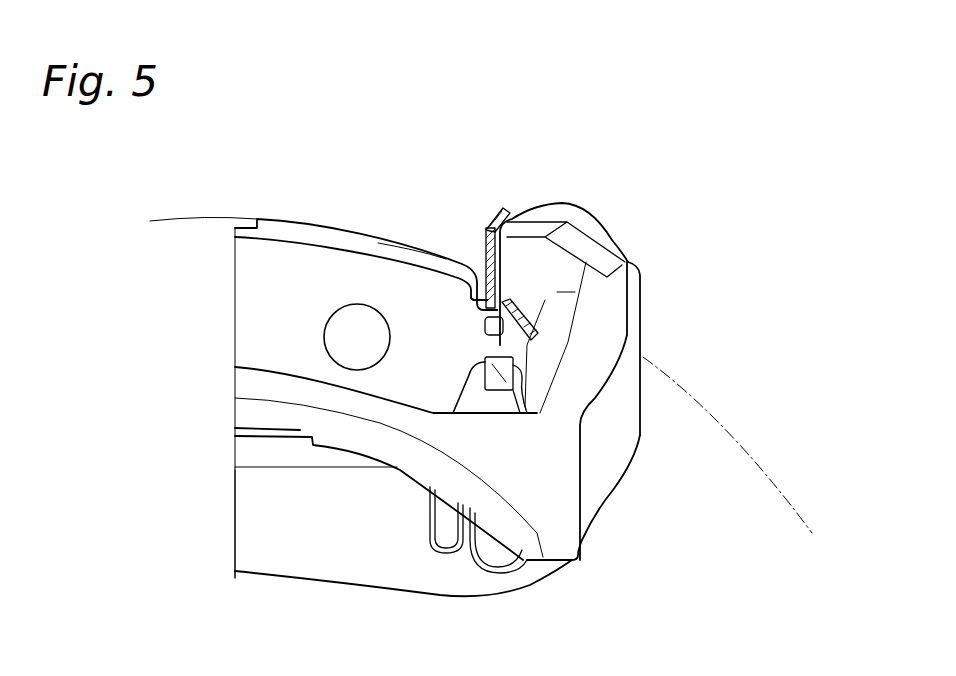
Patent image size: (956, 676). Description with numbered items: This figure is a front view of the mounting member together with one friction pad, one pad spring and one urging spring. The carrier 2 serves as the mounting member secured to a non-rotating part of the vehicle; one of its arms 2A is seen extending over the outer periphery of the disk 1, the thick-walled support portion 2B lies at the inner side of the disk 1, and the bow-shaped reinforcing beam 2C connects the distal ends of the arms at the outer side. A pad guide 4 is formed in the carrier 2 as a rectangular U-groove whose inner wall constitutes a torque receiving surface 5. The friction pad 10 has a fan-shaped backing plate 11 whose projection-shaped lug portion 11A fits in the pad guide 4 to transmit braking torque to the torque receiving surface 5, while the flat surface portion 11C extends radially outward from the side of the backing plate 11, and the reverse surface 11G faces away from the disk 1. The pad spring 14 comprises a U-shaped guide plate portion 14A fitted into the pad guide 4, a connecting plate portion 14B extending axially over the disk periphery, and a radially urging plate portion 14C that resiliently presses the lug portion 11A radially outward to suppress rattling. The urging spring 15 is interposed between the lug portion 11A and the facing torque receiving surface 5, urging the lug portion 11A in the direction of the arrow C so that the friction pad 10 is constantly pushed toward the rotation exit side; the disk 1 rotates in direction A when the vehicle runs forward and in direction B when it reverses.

The disk 1 is at (205, 216).
The carrier 2 is at (560, 580).
The arms 2A is at (567, 275).
The support portion 2B is at (277, 545).
The reinforcing beam 2C is at (267, 420).
The pad guide 4 is at (583, 411).
The torque receiving surface 5 is at (505, 325).
The friction pad 10 is at (230, 318).
The backing plate 11 is at (300, 267).
The lug portion 11A is at (502, 342).
The flat surface portion 11C is at (482, 276).
The reverse surface 11G is at (470, 316).
The pad spring 14 is at (546, 347).
The guide plate portion 14A is at (641, 408).
The connecting plate portion 14B is at (487, 226).
The radially urging plate portion 14C is at (539, 415).
The urging spring 15 is at (513, 312).
The arrow A is at (749, 483).
The arrow B is at (780, 460).
The arrow C is at (483, 325).